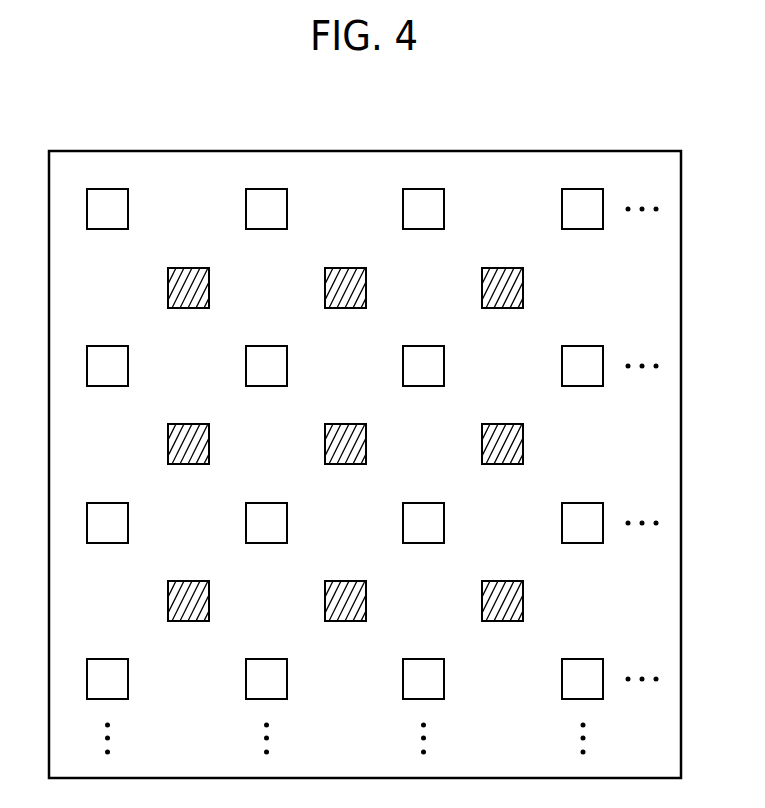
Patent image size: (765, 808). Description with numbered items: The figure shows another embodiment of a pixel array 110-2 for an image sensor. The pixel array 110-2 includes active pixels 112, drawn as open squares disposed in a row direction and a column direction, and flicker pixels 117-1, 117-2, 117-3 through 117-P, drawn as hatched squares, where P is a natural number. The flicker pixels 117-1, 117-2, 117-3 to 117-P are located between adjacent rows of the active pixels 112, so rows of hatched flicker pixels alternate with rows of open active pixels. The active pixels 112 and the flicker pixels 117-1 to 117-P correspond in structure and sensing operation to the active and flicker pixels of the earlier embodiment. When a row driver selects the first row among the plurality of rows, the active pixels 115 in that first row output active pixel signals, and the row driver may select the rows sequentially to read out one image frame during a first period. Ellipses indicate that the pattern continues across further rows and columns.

The pixel array 110-2 is at (535, 133).
The active pixels 112 is at (593, 700).
The active pixels in the first row 115 is at (592, 387).
The flicker pixel 117-1 is at (209, 288).
The flicker pixel 117-2 is at (366, 288).
The flicker pixel 117-3 is at (523, 288).
The flicker pixel 117-P is at (523, 601).